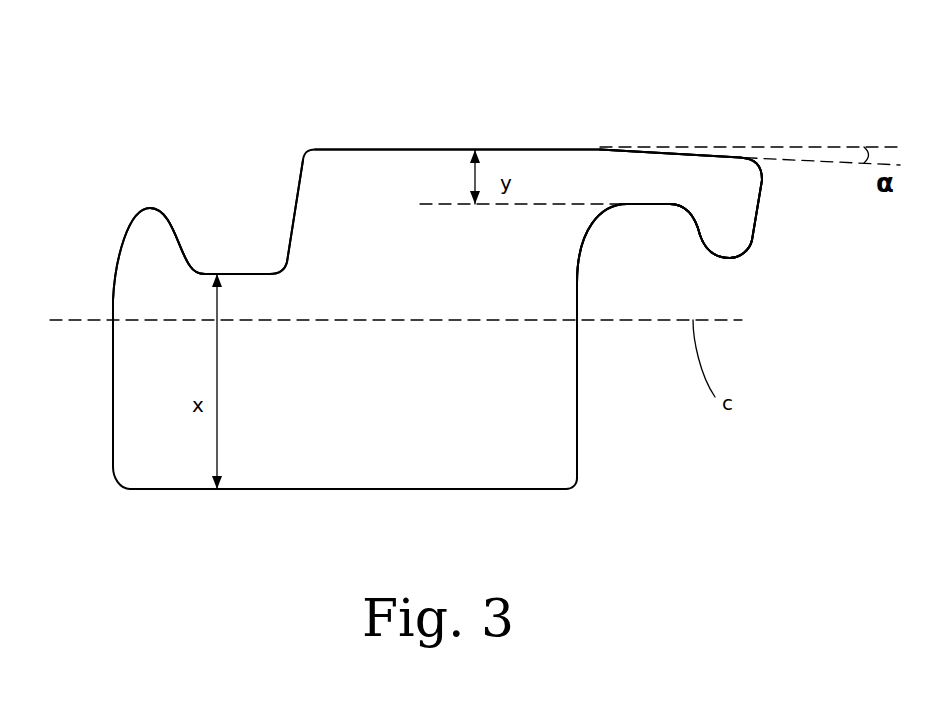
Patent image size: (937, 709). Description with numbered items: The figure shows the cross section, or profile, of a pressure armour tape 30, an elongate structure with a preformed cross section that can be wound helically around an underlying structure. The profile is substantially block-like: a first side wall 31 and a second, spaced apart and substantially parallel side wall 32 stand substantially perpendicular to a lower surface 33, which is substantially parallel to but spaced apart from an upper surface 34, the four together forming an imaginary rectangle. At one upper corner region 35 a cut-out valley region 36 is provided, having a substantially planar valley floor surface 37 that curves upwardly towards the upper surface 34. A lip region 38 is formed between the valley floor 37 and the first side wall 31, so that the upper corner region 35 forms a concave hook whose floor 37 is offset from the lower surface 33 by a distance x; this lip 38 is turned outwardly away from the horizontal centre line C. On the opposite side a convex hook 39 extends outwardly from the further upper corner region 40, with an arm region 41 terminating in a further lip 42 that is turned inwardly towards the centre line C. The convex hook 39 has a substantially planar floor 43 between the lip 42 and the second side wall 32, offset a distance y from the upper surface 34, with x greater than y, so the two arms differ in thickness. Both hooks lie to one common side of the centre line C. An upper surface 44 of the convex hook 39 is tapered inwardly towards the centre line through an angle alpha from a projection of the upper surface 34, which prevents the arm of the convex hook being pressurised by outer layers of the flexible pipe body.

The tape 30 is at (157, 540).
The first side wall 31 is at (113, 392).
The second side wall 32 is at (577, 397).
The lower surface 33 is at (360, 489).
The upper surface 34 is at (377, 149).
The upper corner region 35 is at (231, 120).
The valley region 36 is at (215, 215).
The valley floor surface 37 is at (250, 274).
The lip region 38 is at (140, 260).
The convex hook 39 is at (777, 288).
The further upper corner region 40 is at (519, 105).
The arm region 41 is at (653, 172).
The further lip 42 is at (728, 230).
The floor of the convex hook 43 is at (628, 205).
The upper surface of the convex hook 44 is at (713, 157).